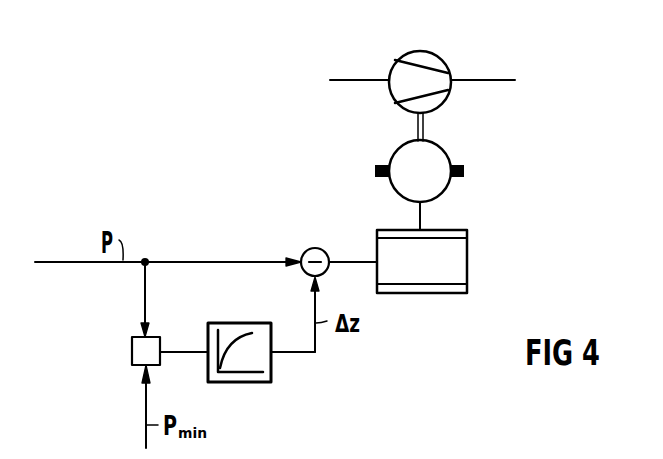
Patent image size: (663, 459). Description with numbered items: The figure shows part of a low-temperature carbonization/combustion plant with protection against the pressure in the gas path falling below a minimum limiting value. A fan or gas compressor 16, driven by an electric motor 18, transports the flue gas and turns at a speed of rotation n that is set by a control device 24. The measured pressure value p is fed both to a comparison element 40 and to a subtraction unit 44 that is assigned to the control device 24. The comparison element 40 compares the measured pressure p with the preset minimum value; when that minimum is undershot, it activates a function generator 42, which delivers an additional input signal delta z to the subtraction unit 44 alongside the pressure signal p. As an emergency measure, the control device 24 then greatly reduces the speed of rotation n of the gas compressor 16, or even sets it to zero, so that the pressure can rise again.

The gas compressor 16 is at (390, 97).
The electric motor 18 is at (442, 146).
The control device 24 is at (468, 263).
The comparison element 40 is at (128, 352).
The function generator 42 is at (242, 300).
The subtraction unit 44 is at (325, 224).